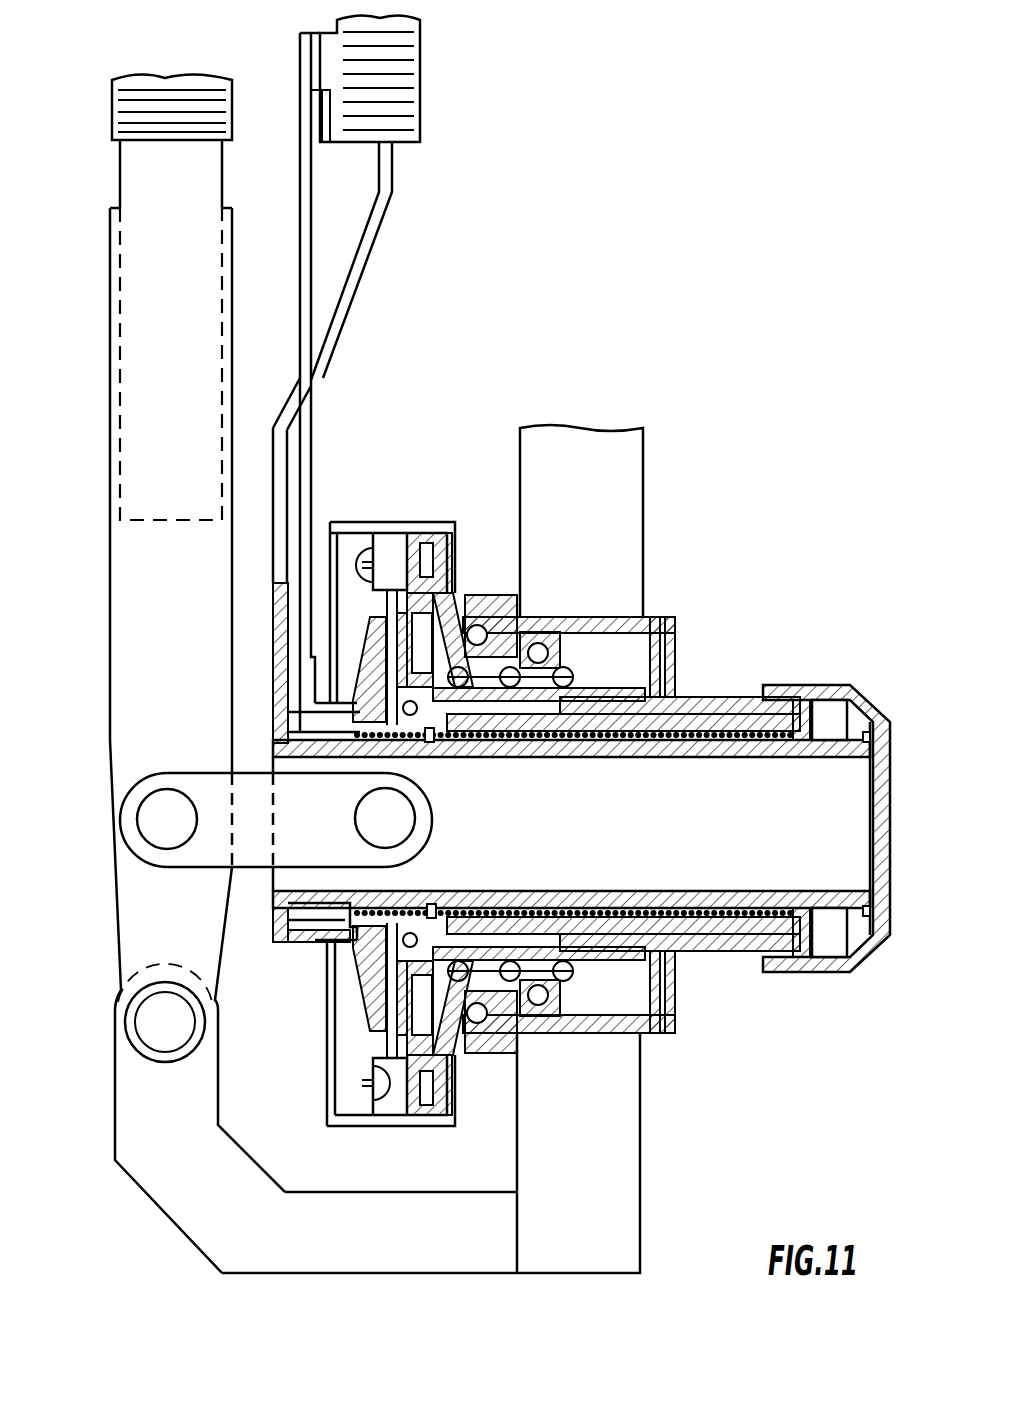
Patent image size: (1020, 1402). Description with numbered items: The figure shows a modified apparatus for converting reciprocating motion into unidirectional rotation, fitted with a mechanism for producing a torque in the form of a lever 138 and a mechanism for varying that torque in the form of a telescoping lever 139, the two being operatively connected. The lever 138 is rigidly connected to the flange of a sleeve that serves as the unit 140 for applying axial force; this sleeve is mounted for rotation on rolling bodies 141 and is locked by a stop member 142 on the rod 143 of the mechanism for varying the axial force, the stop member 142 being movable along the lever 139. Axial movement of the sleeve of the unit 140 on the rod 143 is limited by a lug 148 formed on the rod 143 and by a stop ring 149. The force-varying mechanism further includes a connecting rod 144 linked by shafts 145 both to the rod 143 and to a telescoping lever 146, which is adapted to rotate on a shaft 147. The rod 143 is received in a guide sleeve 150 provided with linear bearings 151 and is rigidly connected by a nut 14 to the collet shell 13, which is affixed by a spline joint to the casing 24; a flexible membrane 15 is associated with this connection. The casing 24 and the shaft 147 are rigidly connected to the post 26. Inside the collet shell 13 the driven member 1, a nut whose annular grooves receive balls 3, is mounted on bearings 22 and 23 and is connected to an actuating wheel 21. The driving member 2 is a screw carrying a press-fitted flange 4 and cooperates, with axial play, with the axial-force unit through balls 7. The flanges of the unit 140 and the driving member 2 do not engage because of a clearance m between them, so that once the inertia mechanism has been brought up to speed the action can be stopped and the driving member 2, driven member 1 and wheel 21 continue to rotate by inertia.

The driven member 1 is at (437, 1053).
The driving member 2 is at (626, 937).
The balls 3 is at (583, 664).
The flange 4 is at (412, 647).
The balls 7 is at (370, 945).
The collet shell 13 is at (575, 1035).
The nut 14 is at (812, 963).
The flexible membrane 15 is at (885, 812).
The wheel 21 is at (387, 1102).
The bearing 22 is at (477, 597).
The bearing 23 is at (540, 632).
The casing 24 is at (600, 618).
The post 26 is at (585, 445).
The lever 138 is at (357, 258).
The telescoping lever 139 is at (410, 88).
The unit for applying axial force 140 is at (370, 973).
The rolling bodies 141 is at (440, 903).
The stop member 142 is at (303, 443).
The rod 143 is at (553, 898).
The connecting rod 144 is at (178, 855).
The shafts 145 is at (147, 808).
The telescoping lever 146 is at (118, 623).
The shaft 147 is at (168, 1040).
The lug 148 is at (360, 736).
The stop ring 149 is at (478, 905).
The guide sleeve 150 is at (730, 723).
The linear bearings 151 is at (740, 757).
The clearance m is at (387, 1040).